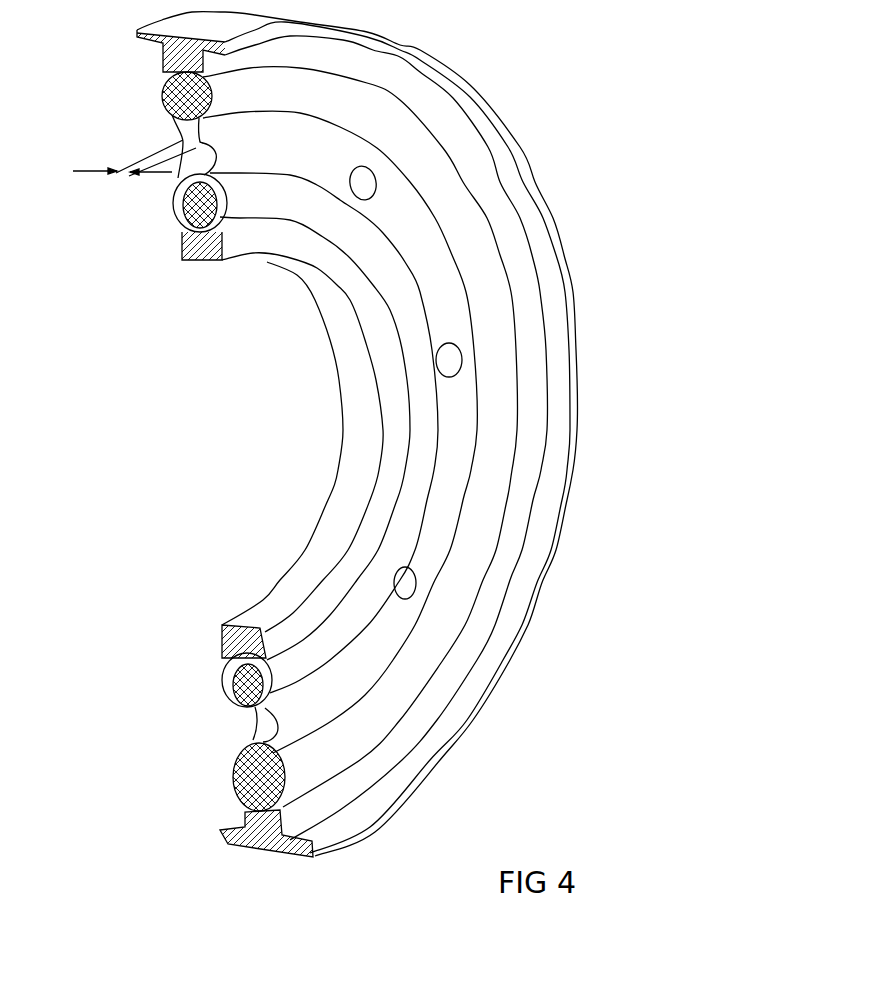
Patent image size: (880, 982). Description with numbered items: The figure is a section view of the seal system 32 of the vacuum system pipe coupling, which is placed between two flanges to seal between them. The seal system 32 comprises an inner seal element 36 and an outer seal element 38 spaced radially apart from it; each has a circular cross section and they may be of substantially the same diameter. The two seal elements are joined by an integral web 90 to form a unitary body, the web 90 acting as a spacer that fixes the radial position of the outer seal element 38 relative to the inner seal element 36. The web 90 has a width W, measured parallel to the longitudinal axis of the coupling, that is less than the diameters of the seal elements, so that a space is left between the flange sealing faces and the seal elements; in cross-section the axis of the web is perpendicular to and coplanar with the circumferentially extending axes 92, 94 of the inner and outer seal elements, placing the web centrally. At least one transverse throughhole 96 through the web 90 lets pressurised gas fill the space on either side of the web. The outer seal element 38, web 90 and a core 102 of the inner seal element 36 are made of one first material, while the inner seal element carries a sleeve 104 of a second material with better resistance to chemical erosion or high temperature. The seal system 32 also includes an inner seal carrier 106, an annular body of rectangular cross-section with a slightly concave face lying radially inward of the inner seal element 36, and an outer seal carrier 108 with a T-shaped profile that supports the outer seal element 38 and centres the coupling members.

The seal system 32 is at (655, 247).
The inner seal element 36 is at (237, 682).
The outer seal element 38 is at (162, 95).
The web 90 is at (183, 136).
The longitudinal axis of the inner seal element 92 is at (218, 700).
The longitudinal axis of the outer seal element 94 is at (224, 832).
The transverse throughhole 96 is at (377, 182).
The core 102 is at (183, 230).
The sleeve 104 is at (173, 200).
The inner seal carrier 106 is at (337, 358).
The outer seal carrier 108 is at (470, 83).
The width of the web W is at (134, 175).